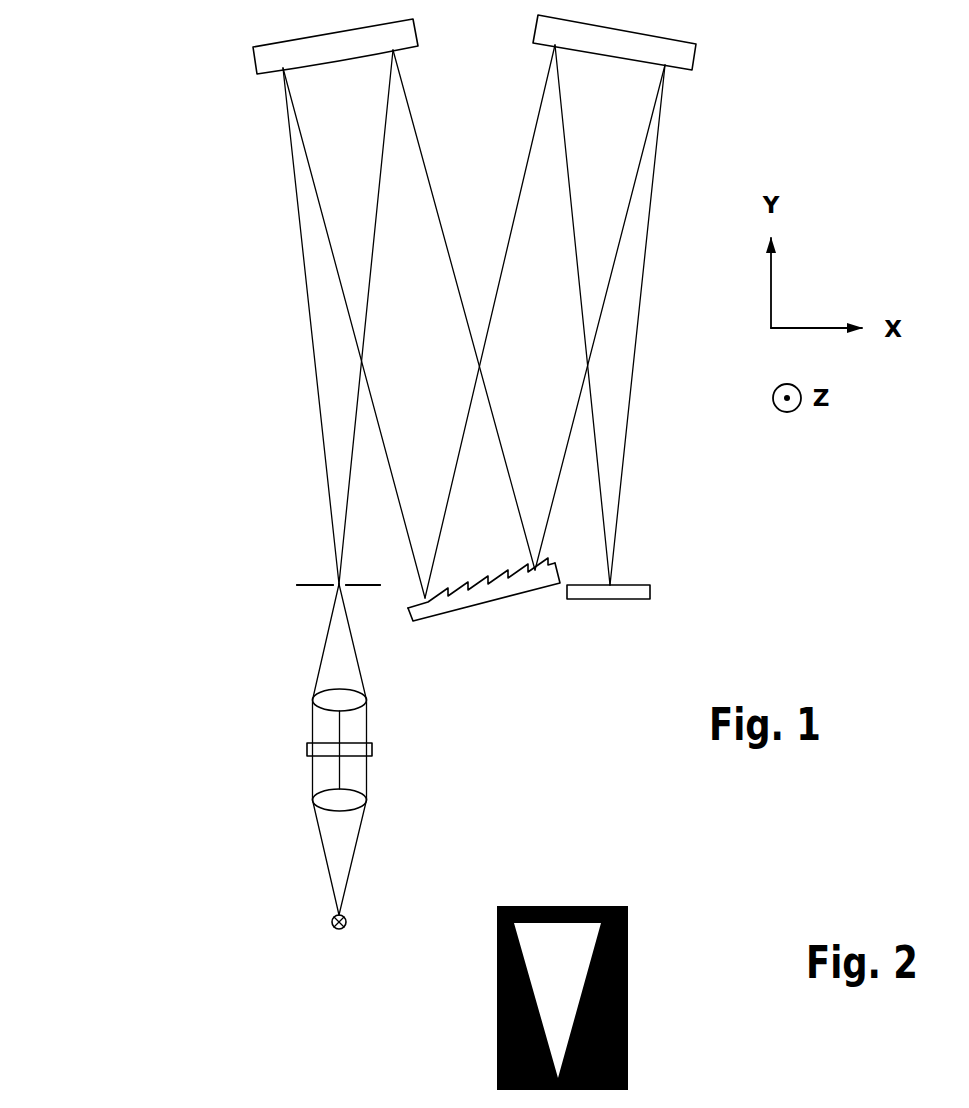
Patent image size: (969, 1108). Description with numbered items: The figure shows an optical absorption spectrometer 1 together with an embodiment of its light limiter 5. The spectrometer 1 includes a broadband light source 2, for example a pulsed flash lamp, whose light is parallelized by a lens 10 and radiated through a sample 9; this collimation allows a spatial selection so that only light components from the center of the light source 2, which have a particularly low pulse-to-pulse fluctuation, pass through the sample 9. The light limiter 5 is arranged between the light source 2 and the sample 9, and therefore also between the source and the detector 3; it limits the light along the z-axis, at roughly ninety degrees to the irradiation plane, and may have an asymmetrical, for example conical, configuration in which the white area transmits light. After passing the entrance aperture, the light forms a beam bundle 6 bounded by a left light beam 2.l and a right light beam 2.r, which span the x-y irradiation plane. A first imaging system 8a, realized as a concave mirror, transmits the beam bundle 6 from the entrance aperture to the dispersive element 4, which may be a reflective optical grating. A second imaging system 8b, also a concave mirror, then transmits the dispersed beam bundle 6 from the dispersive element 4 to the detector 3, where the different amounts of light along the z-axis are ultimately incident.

In FIG. 1, the spectrometer 1 is at (168, 188).
In FIG. 1, the light source 2 is at (333, 922).
In FIG. 1, the left light beam 2.l is at (305, 262).
In FIG. 1, the right light beam 2.r is at (375, 210).
In FIG. 1, the detector 3 is at (650, 590).
In FIG. 1, the dispersive element 4 is at (493, 600).
In FIG. 1, the light limiter 5 is at (335, 578).
In FIG. 2, the light limiter 5 is at (628, 967).
In FIG. 1, the beam bundle 6 is at (320, 532).
In FIG. 1, the first imaging system 8a is at (254, 57).
In FIG. 1, the second imaging system 8b is at (697, 57).
In FIG. 1, the sample 9 is at (307, 752).
In FIG. 1, the lens 10 is at (313, 702).